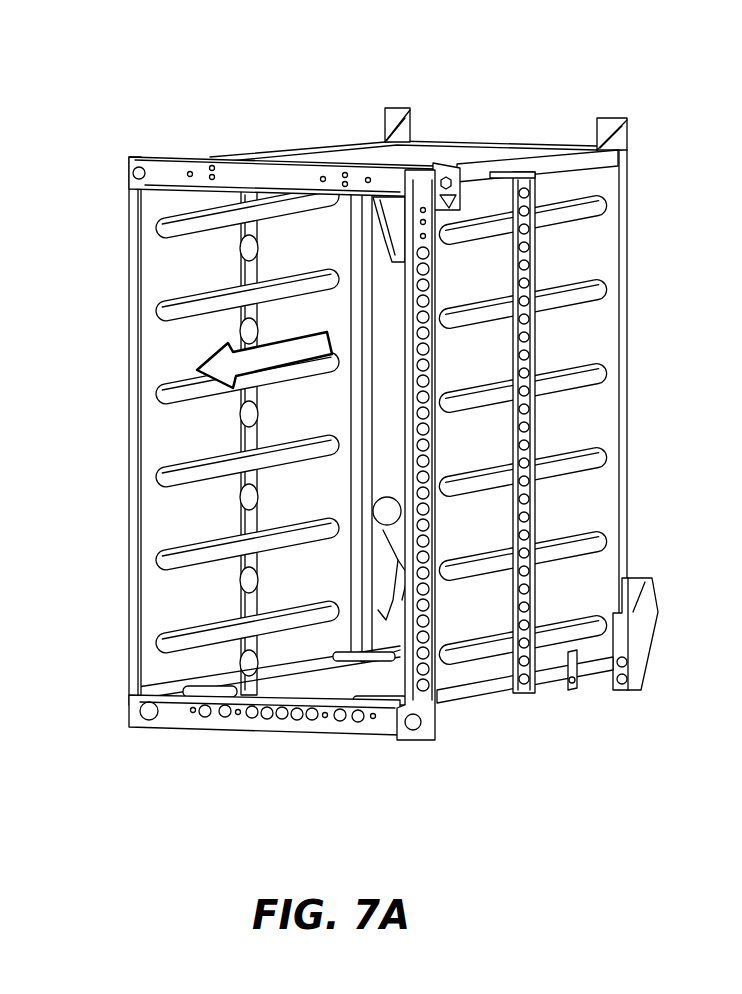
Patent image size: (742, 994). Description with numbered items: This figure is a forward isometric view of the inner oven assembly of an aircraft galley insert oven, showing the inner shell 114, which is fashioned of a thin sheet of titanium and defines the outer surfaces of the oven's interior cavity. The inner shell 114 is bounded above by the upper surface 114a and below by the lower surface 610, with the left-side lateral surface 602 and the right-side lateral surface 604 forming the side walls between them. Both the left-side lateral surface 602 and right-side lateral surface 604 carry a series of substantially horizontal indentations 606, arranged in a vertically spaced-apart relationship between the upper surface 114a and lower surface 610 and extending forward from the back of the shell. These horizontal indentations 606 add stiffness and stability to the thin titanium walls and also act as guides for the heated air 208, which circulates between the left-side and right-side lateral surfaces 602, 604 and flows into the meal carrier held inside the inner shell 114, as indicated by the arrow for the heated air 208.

The inner shell 114 is at (88, 88).
The upper surface 114a is at (365, 152).
The left-side lateral surface 602 is at (205, 255).
The right-side lateral surface 604 is at (580, 255).
The heated air 208 is at (197, 368).
The horizontal indentations 606 is at (208, 548).
The lower surface 610 is at (338, 678).